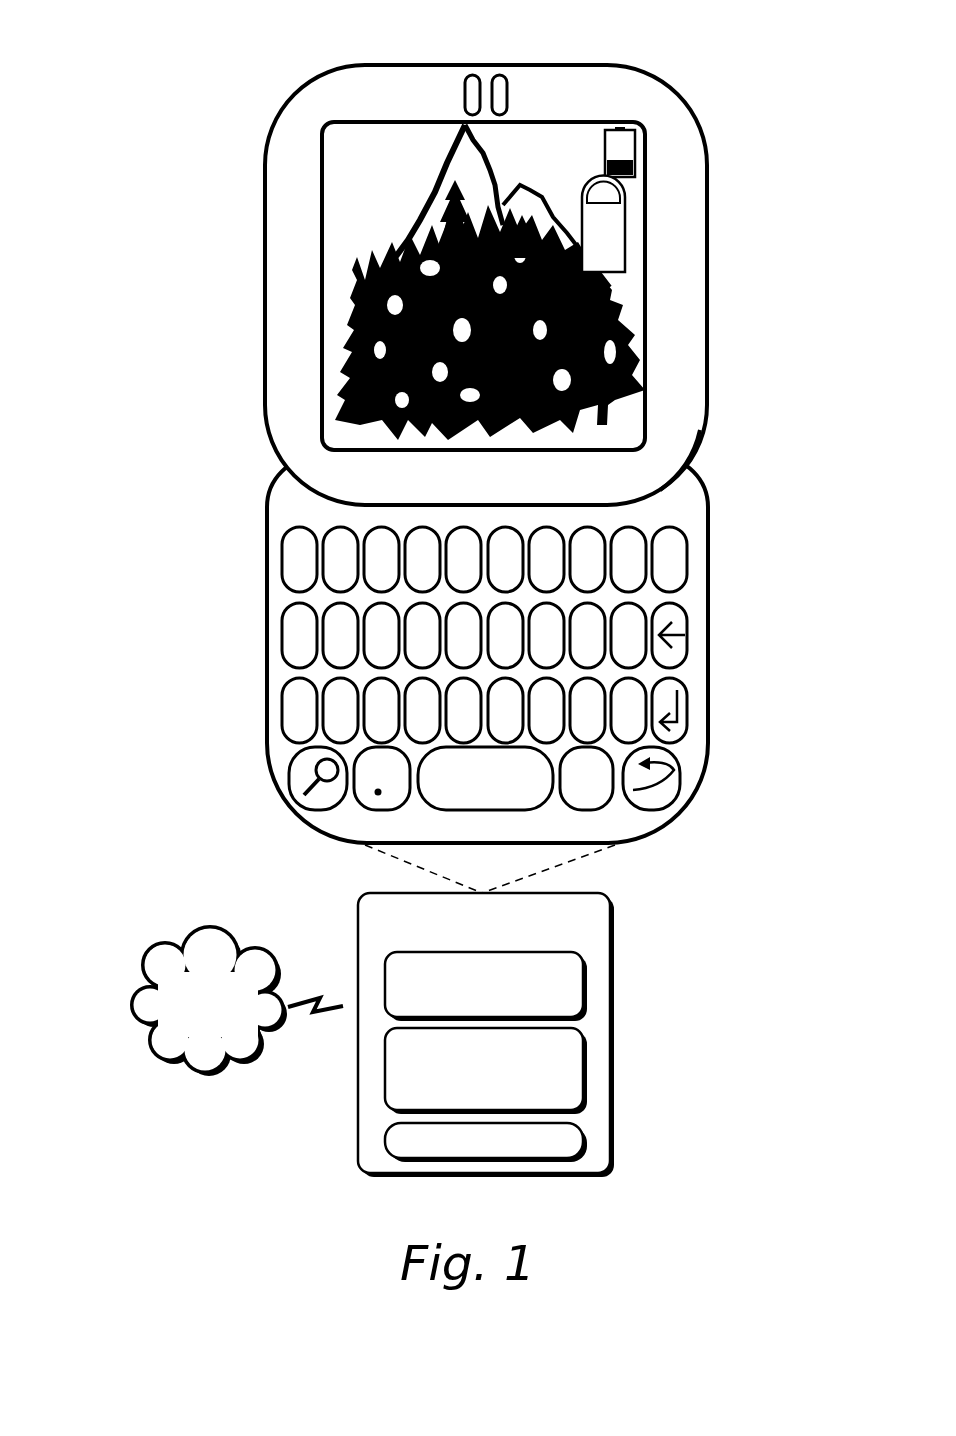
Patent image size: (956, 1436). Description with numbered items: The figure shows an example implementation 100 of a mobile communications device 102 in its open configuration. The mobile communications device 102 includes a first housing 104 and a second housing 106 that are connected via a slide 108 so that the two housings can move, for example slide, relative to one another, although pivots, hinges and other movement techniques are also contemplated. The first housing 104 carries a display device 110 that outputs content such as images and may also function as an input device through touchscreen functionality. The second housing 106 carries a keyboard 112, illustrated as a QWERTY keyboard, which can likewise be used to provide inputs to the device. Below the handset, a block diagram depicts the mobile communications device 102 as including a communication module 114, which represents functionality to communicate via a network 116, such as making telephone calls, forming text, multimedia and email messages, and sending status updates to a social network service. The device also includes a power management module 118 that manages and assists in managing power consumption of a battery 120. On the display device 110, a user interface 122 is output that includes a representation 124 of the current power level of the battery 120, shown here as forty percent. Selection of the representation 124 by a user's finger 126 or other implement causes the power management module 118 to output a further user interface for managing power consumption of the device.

The example implementation 100 is at (196, 64).
The mobile communications device 102 is at (537, 948).
The first housing 104 is at (283, 112).
The second housing 106 is at (273, 508).
The slide 108 is at (692, 465).
The display device 110 is at (322, 284).
The keyboard 112 is at (724, 514).
The communication module 114 is at (538, 1006).
The network 116 is at (225, 1027).
The power management module 118 is at (538, 1103).
The battery 120 is at (538, 1151).
The user interface 122 is at (407, 130).
The representation of a current power level 124 is at (618, 127).
The user's finger 126 is at (588, 262).